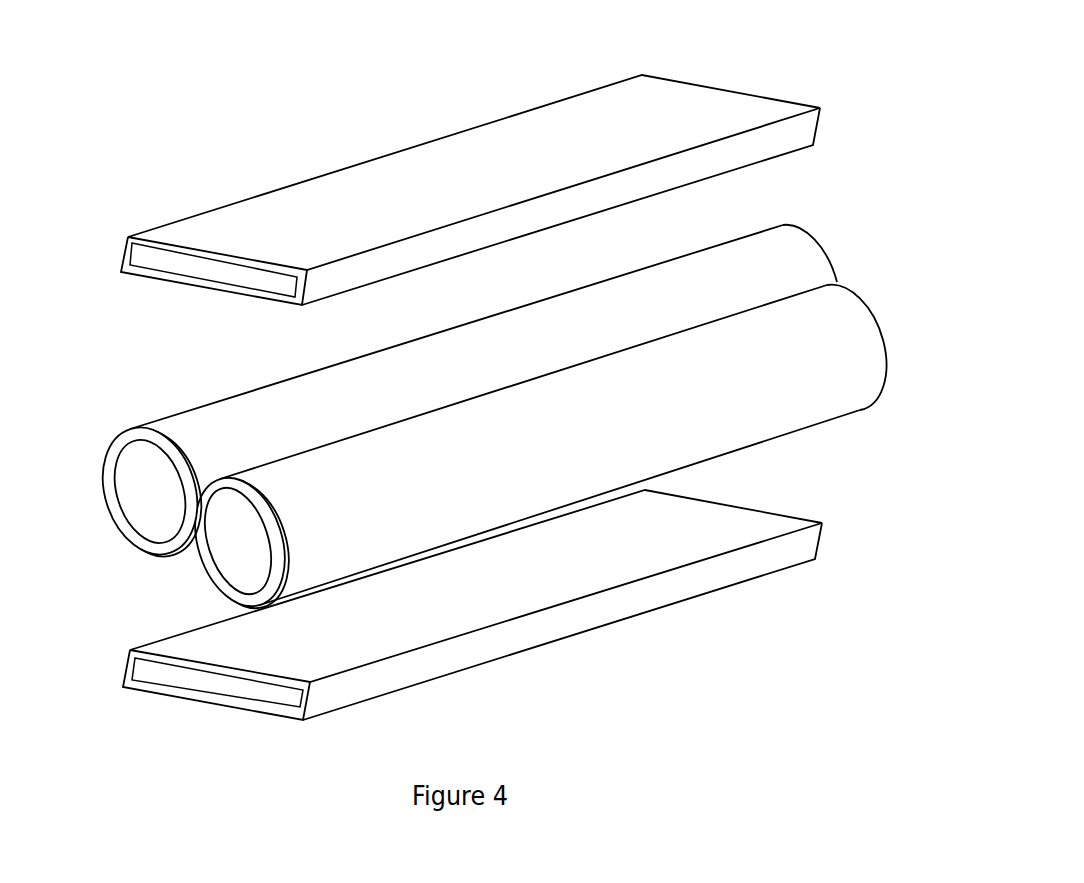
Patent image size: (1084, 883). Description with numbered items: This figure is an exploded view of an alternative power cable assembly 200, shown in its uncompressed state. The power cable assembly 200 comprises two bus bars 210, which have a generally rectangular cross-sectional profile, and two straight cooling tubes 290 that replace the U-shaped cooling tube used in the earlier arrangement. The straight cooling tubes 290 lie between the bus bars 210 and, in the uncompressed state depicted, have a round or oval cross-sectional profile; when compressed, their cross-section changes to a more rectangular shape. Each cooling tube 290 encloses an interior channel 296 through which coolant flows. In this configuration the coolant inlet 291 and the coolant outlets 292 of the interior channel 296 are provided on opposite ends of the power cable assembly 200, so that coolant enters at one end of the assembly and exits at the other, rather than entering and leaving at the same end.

The power cable assembly 200 is at (134, 67).
The bus bars 210 is at (183, 216).
The straight cooling tubes 290 is at (243, 393).
The coolant inlet 291 is at (242, 532).
The coolant outlets 292 is at (862, 307).
The interior channel 296 is at (162, 467).